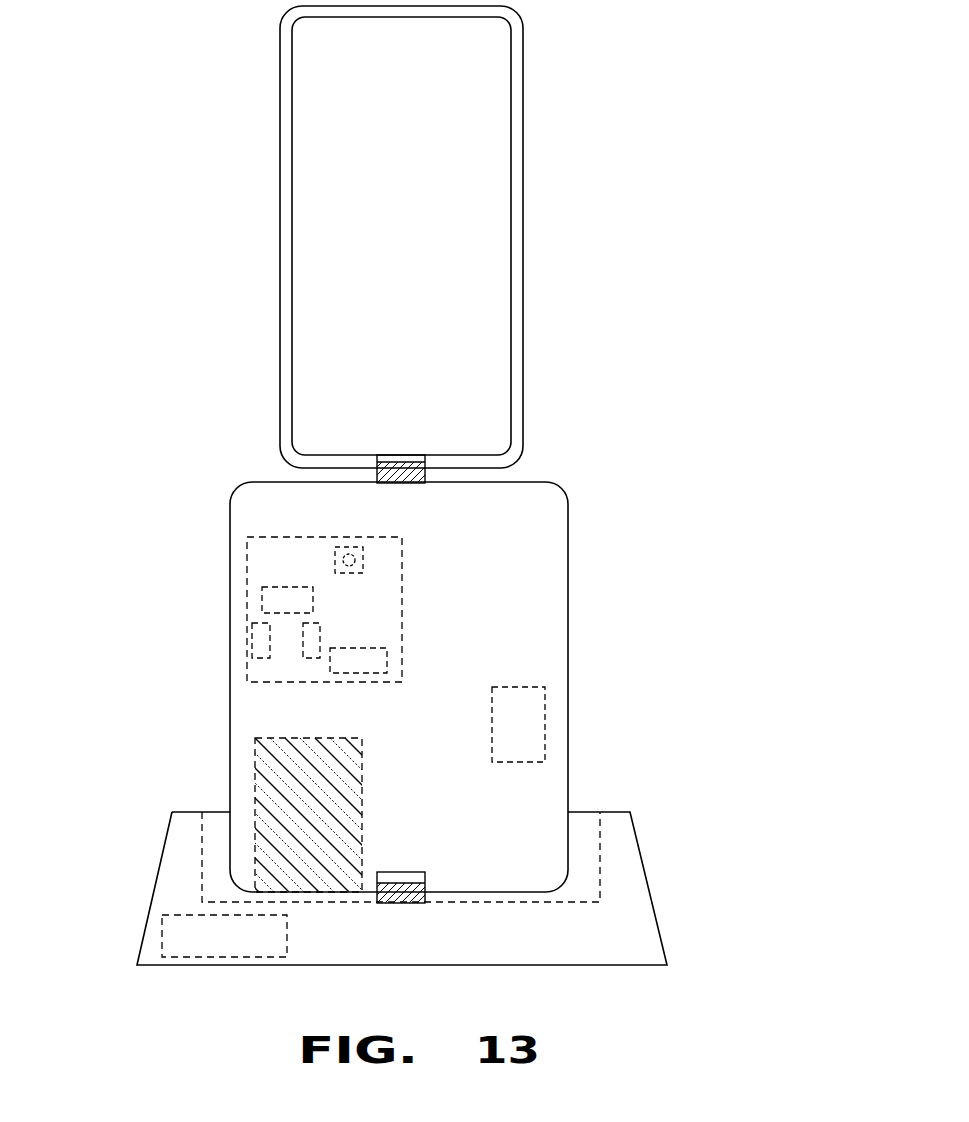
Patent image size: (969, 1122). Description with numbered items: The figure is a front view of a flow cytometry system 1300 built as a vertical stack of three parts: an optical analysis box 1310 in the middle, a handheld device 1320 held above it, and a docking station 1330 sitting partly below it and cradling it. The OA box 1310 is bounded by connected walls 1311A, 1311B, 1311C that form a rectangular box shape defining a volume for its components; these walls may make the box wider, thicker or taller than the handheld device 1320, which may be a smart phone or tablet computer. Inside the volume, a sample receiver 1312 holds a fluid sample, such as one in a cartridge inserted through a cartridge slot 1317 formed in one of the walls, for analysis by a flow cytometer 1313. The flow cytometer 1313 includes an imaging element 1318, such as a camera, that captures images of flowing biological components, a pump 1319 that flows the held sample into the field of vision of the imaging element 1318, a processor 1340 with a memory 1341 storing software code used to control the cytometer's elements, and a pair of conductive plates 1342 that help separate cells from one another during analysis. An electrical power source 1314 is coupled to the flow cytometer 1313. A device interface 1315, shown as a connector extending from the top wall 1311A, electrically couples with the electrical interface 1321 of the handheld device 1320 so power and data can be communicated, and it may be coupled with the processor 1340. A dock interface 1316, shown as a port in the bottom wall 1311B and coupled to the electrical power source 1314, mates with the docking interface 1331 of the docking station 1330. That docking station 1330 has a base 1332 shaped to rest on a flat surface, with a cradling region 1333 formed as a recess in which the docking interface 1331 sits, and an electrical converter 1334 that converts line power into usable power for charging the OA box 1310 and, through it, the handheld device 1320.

The flow cytometry system 1300 is at (632, 90).
The optical analysis box 1310 is at (590, 612).
The wall 1311A is at (275, 482).
The wall 1311B is at (243, 902).
The wall 1311C is at (230, 633).
The sample receiver 1312 is at (362, 808).
The flow cytometer 1313 is at (403, 560).
The electrical power source 1314 is at (547, 722).
The device interface 1315 is at (455, 478).
The dock interface 1316 is at (412, 872).
The cartridge slot 1317 is at (305, 892).
The imaging element 1318 is at (260, 598).
The pump 1319 is at (390, 658).
The handheld device 1320 is at (542, 257).
The electrical interface 1321 is at (405, 455).
The docking station 1330 is at (658, 825).
The docking interface 1331 is at (413, 903).
The base 1332 is at (615, 811).
The cradling region 1333 is at (592, 913).
The electrical converter 1334 is at (160, 940).
The processor 1340 is at (357, 547).
The memory 1341 is at (347, 553).
The conductive plates 1342 is at (310, 660).